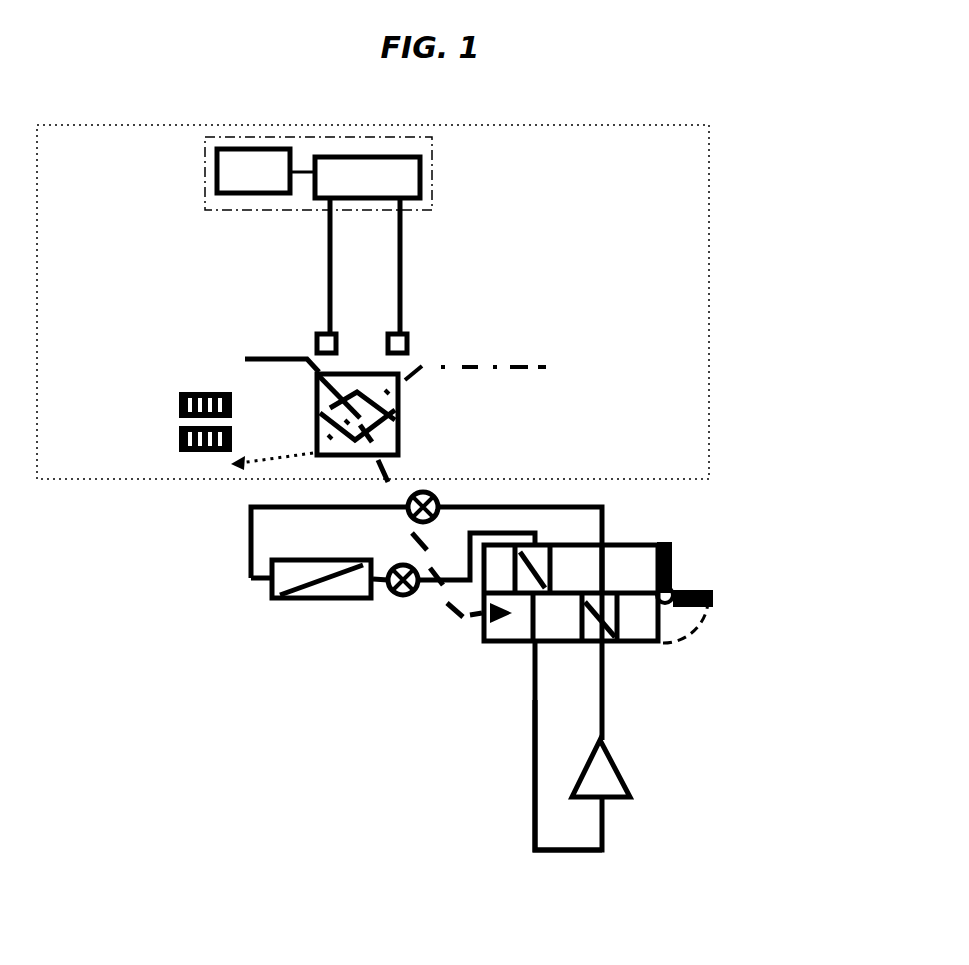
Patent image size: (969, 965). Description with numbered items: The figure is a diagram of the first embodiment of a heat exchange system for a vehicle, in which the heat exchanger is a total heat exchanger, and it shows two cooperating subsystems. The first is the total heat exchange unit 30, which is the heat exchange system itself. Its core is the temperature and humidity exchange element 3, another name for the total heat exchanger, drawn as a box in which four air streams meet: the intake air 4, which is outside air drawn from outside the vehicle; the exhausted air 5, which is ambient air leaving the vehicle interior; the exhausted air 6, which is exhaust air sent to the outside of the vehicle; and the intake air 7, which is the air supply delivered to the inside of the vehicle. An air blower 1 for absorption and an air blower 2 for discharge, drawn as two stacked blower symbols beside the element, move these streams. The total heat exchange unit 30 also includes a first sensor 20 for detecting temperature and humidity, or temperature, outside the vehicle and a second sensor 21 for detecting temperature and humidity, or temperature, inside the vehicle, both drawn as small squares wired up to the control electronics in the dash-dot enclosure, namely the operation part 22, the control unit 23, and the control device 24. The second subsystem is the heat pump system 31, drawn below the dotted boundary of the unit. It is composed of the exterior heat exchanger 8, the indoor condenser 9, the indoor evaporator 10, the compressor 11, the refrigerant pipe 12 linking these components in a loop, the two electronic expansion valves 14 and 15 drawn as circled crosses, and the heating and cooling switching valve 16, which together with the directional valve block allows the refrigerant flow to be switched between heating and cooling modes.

The air blower for absorption 1 is at (185, 392).
The air blower for discharge 2 is at (176, 432).
The temperature and humidity exchange element 3 is at (335, 330).
The intake air 4 is at (282, 355).
The exhausted air 5 is at (482, 362).
The exhausted air 6 is at (233, 465).
The intake air 7 is at (385, 463).
The exterior heat exchanger 8 is at (348, 583).
The indoor condenser 9 is at (623, 643).
The indoor evaporator 10 is at (598, 598).
The compressor 11 is at (600, 777).
The refrigerant pipe 12 is at (552, 840).
The electronic expansion valve 14 is at (393, 600).
The electronic expansion valve 15 is at (503, 507).
The heating and cooling switching valve 16 is at (673, 567).
The first sensor 20 is at (323, 333).
The second sensor 21 is at (410, 348).
The operation part 22 is at (395, 183).
The control unit 23 is at (216, 157).
The control device 24 is at (203, 203).
The total heat exchange unit 30 is at (745, 290).
The heat pump system 31 is at (718, 648).